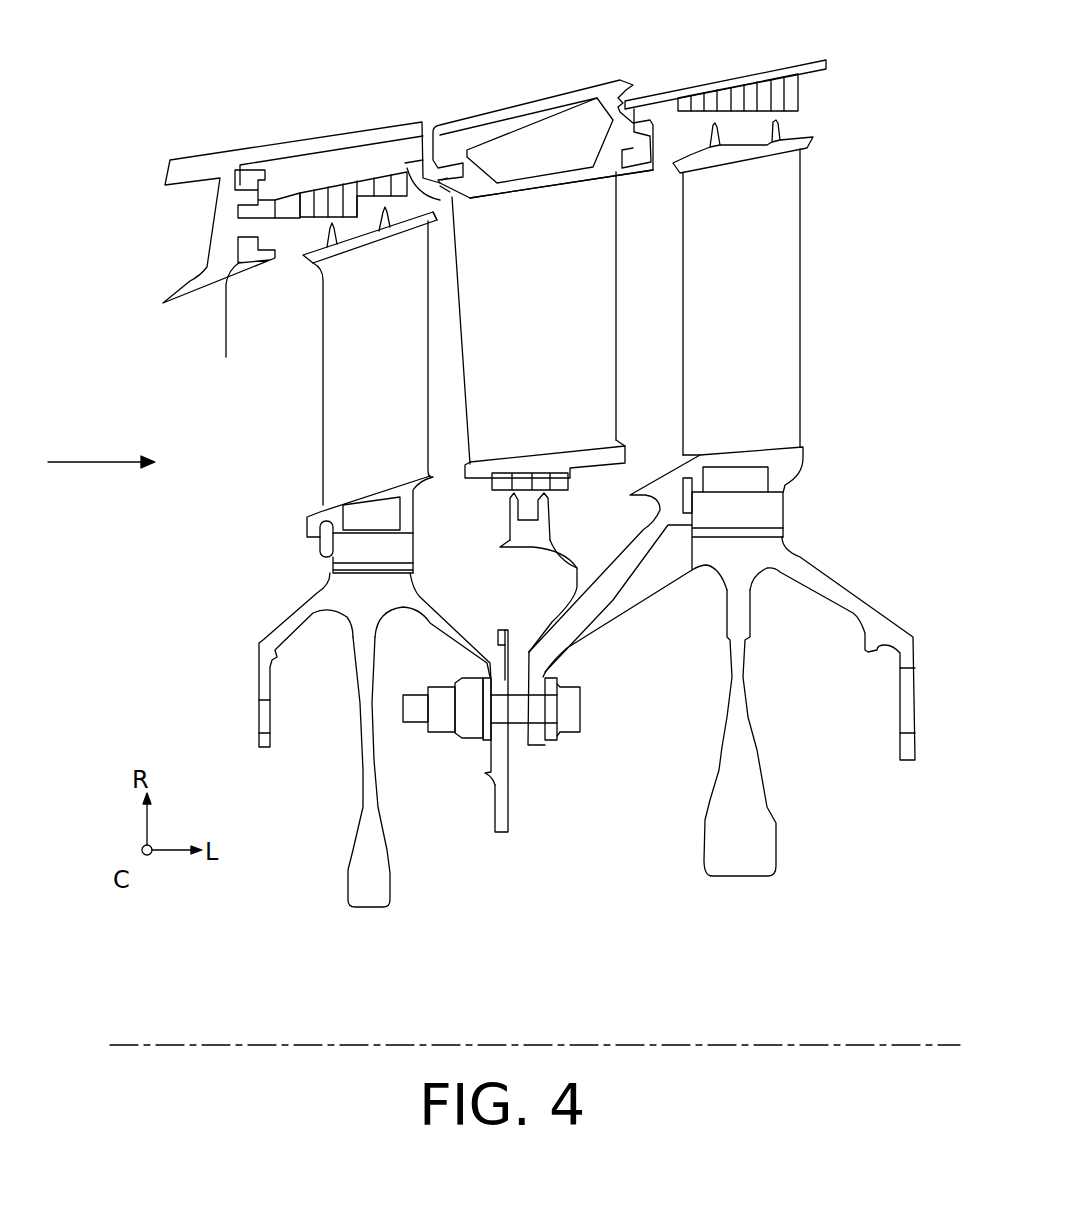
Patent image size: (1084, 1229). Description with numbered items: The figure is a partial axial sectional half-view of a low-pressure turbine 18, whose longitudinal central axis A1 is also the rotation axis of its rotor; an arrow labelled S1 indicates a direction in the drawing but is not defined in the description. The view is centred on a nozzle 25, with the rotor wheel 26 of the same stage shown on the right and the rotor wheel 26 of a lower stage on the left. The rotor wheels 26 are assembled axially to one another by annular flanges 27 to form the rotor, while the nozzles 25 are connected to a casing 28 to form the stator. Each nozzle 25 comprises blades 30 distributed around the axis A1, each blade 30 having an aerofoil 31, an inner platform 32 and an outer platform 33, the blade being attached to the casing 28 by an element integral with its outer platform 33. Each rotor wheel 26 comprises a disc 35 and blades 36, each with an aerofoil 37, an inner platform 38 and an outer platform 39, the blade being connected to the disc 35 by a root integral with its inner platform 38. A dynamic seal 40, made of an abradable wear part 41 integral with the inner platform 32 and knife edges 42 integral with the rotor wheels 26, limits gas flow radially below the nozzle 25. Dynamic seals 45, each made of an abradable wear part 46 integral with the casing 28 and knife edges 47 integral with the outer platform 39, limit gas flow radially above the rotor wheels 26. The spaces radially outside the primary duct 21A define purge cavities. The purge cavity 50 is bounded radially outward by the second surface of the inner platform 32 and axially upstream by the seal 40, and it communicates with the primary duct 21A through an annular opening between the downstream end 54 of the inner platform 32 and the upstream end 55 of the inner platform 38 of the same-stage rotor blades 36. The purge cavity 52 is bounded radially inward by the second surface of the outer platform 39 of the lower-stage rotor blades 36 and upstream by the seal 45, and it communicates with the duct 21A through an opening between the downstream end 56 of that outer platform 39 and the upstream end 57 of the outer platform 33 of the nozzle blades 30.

The turbine 18 is at (212, 61).
The primary duct 21A is at (675, 318).
The nozzle 25 is at (534, 148).
The rotor wheel 26 is at (575, 764).
The annular flange 27 is at (537, 778).
The casing 28 is at (388, 129).
The blade 30 is at (552, 324).
The aerofoil 31 is at (462, 398).
The inner platform 32 is at (545, 413).
The outer platform 33 is at (507, 200).
The disc 35 is at (355, 872).
The blade 36 is at (565, 355).
The aerofoil 37 is at (320, 390).
The inner platform 38 is at (250, 383).
The outer platform 39 is at (397, 228).
The dynamic seal 40 is at (503, 562).
The abradable wear part 41 is at (502, 491).
The knife edges 42 is at (545, 505).
The dynamic seal 45 is at (493, 163).
The abradable wear part 46 is at (372, 200).
The knife edges 47 is at (383, 212).
The purge cavity 50 is at (620, 534).
The purge cavity 52 is at (413, 183).
The downstream end 54 is at (622, 445).
The upstream end 55 is at (683, 483).
The downstream end 56 is at (440, 203).
The upstream end 57 is at (443, 200).
The flow direction S1 is at (100, 461).
The longitudinal central axis A1 is at (147, 1045).